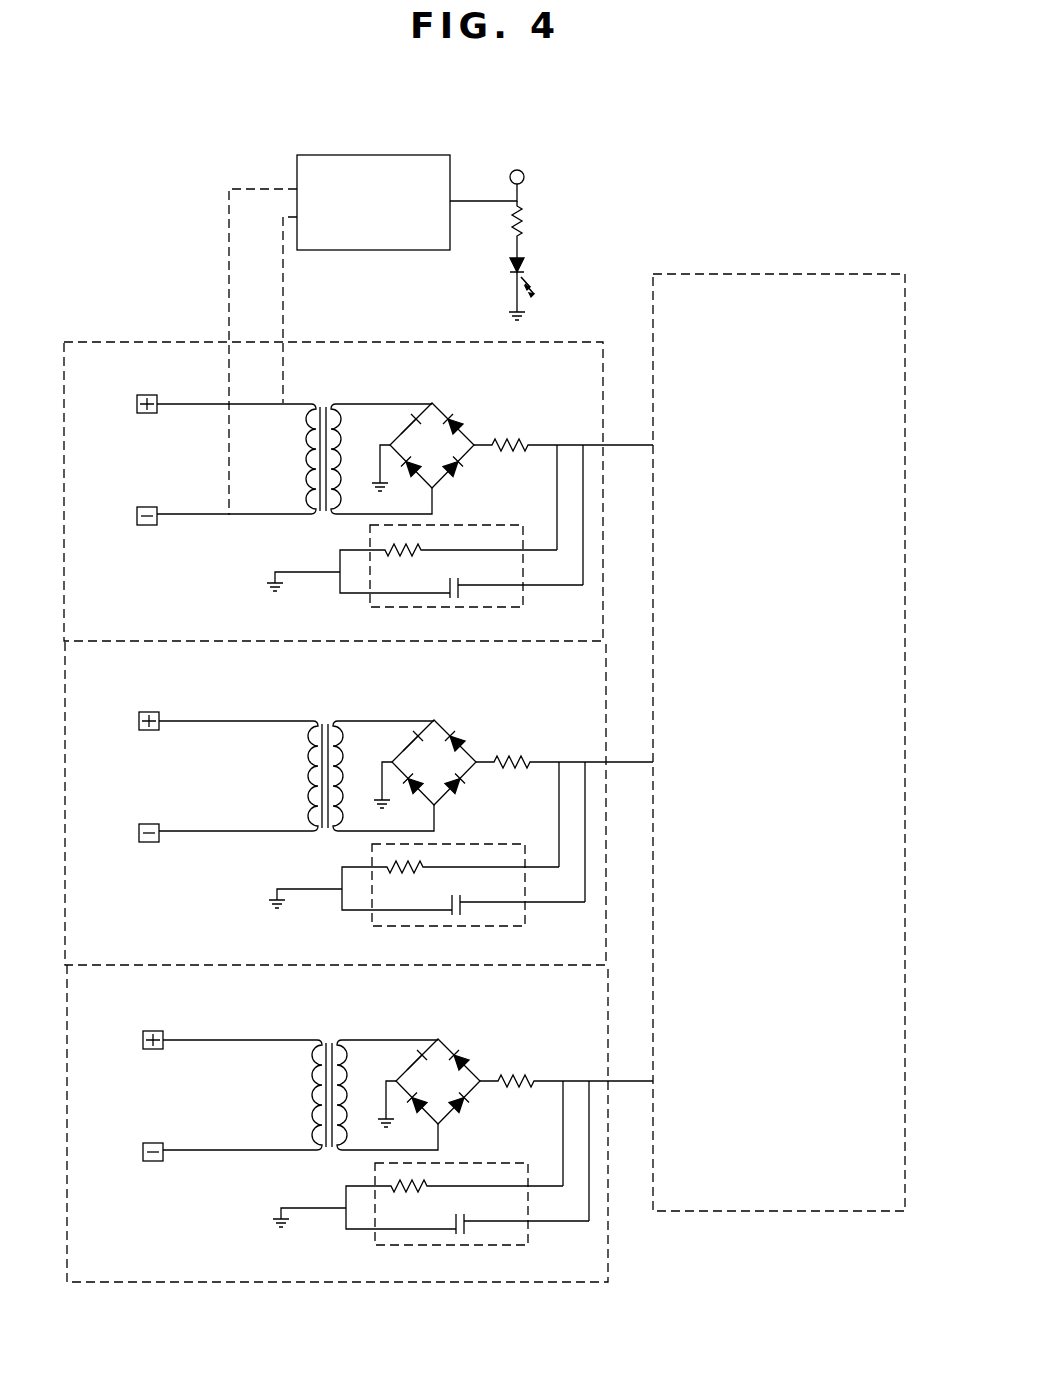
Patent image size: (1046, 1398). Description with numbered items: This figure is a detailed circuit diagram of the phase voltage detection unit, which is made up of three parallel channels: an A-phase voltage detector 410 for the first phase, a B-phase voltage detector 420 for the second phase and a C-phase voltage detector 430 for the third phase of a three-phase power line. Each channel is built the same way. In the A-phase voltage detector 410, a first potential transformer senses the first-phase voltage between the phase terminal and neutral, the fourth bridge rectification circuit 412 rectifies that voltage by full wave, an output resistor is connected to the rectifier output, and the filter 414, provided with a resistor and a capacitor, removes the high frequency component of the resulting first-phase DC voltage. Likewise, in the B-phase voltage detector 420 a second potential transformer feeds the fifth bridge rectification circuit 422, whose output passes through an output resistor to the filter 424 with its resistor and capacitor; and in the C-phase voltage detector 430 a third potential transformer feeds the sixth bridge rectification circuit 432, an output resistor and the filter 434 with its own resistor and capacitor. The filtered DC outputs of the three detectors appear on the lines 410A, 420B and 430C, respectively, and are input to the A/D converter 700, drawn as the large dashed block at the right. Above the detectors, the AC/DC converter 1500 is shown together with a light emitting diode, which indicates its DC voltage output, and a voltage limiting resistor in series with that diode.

The AC/DC converter 1500 is at (350, 155).
The A/D converter 700 is at (718, 270).
The AΦ voltage detector 410 is at (97, 342).
The output line of AΦ voltage detector 410A is at (628, 445).
The fourth bridge rectification circuit 412 is at (444, 406).
The filter 414 is at (372, 528).
The BΦ voltage detector 420 is at (607, 725).
The output line of BΦ voltage detector 420B is at (632, 763).
The fifth bridge rectification circuit 422 is at (479, 799).
The filter 424 is at (412, 885).
The CΦ voltage detector 430 is at (607, 1045).
The output line of CΦ voltage detector 430C is at (630, 1080).
The sixth bridge rectification circuit 432 is at (483, 1118).
The filter 434 is at (416, 1204).